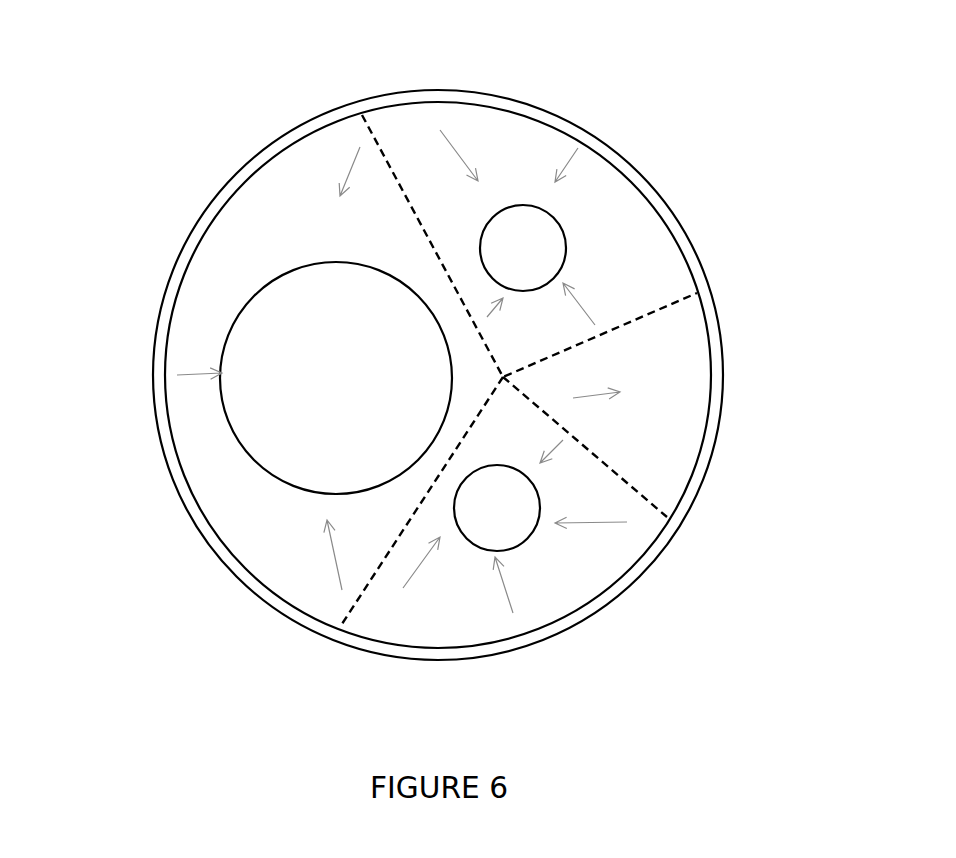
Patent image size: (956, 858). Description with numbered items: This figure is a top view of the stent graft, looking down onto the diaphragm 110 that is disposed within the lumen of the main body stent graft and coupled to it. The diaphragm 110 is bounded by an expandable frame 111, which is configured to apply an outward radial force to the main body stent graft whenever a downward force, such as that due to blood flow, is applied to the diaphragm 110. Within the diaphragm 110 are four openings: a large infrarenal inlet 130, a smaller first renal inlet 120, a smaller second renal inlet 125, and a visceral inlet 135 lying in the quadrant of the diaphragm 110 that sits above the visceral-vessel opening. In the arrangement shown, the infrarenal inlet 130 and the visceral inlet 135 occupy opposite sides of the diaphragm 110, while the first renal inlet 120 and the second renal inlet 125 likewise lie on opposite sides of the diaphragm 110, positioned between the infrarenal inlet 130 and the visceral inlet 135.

The diaphragm 110 is at (249, 99).
The expandable frame 111 is at (203, 518).
The first renal inlet 120 is at (565, 232).
The second renal inlet 125 is at (513, 548).
The infrarenal inlet 130 is at (277, 273).
The visceral inlet 135 is at (637, 385).